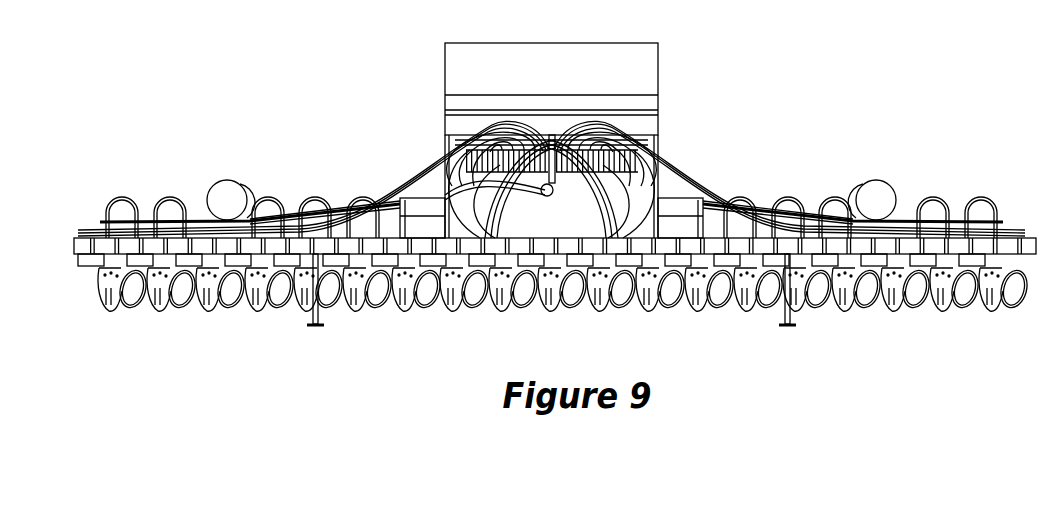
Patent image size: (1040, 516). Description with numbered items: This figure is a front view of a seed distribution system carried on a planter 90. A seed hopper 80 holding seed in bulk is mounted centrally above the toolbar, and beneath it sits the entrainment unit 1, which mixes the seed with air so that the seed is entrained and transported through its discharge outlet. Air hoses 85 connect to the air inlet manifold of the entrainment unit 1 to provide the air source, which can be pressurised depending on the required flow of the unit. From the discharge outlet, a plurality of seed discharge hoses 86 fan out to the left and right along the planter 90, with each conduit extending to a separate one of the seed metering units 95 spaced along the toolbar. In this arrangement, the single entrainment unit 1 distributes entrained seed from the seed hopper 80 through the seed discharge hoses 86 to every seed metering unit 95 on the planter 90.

The planter 90 is at (752, 83).
The seed metering units 95 is at (82, 244).
The seed hopper 80 is at (562, 84).
The entrainment unit 1 is at (655, 167).
The air hoses 85 is at (475, 188).
The seed discharge hoses 86 is at (418, 163).